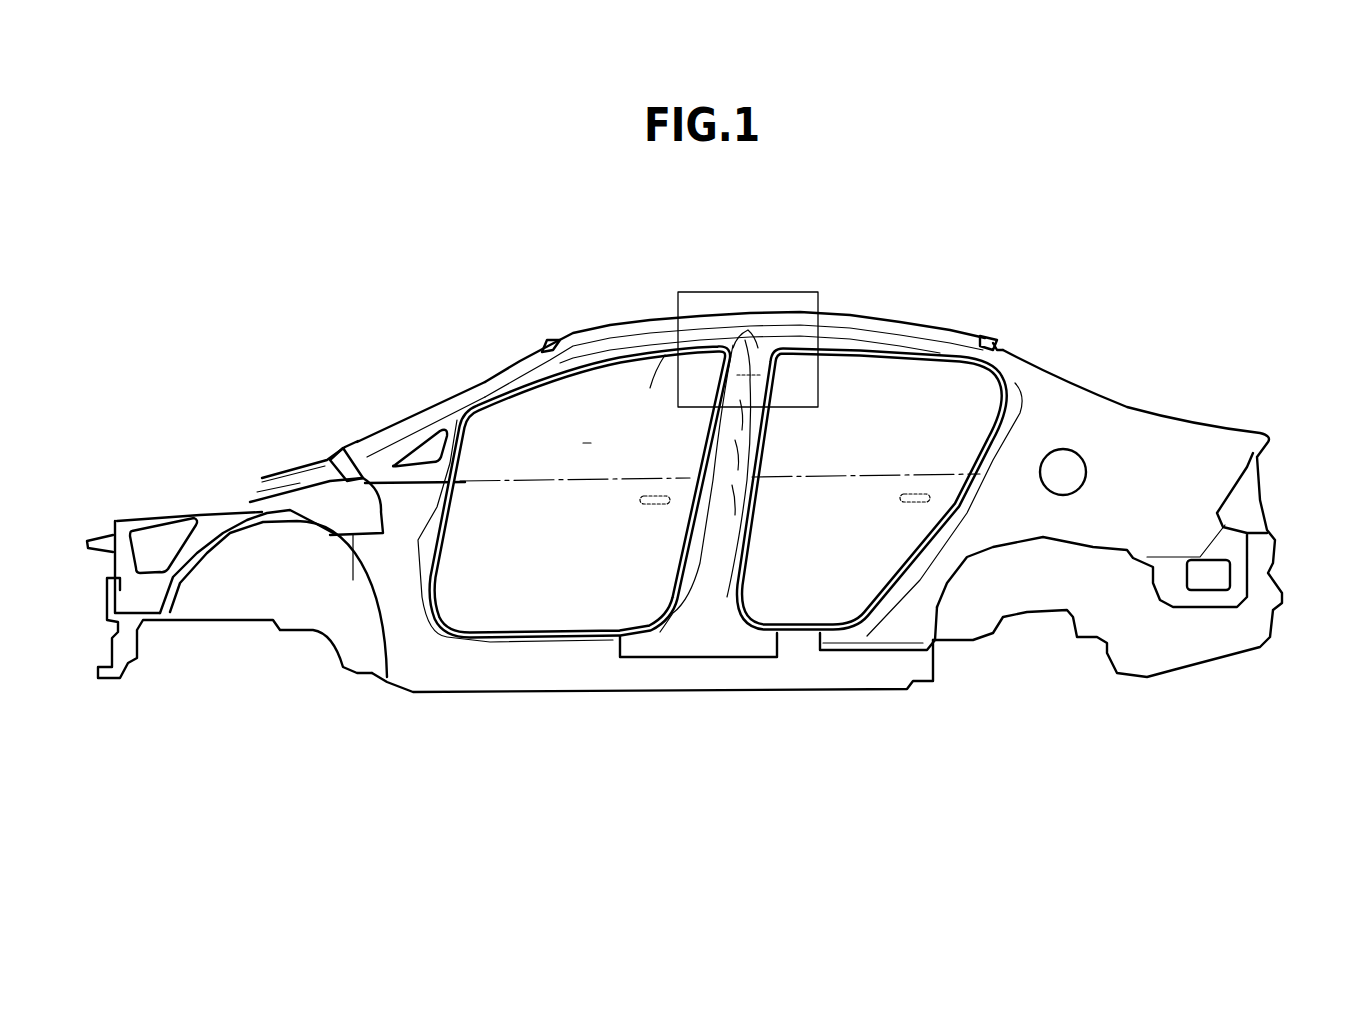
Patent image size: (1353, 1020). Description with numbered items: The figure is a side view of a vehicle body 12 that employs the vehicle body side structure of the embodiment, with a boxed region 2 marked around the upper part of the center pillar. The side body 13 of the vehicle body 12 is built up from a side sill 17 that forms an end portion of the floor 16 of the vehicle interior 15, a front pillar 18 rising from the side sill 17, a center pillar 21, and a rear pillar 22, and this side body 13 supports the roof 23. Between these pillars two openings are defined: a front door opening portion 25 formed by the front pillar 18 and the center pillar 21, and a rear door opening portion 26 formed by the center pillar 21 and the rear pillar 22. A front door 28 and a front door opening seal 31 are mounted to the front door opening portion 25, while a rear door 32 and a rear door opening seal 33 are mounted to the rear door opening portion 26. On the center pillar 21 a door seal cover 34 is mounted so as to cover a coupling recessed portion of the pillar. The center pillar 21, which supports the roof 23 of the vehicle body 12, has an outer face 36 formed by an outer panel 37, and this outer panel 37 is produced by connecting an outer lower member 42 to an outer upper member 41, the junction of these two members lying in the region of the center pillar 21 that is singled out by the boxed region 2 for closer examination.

The center pillar upper portion (enlarged region) 2 is at (760, 290).
The vehicle body 12 is at (335, 427).
The side body 13 is at (493, 376).
The vehicle interior 15 is at (587, 442).
The floor 16 is at (580, 713).
The side sill 17 is at (692, 680).
The front pillar 18 is at (450, 466).
The center pillar 21 is at (695, 452).
The rear pillar 22 is at (950, 527).
The roof 23 is at (865, 317).
The front door opening portion 25 is at (442, 540).
The rear door opening portion 26 is at (743, 560).
The front door 28 is at (567, 478).
The front door opening seal 31 is at (657, 360).
The rear door 32 is at (867, 470).
The rear door opening seal 33 is at (937, 363).
The door seal cover 34 is at (718, 410).
The outer face 36 is at (732, 453).
The outer panel 37 is at (733, 497).
The outer upper member 41 is at (767, 368).
The outer lower member 42 is at (740, 427).